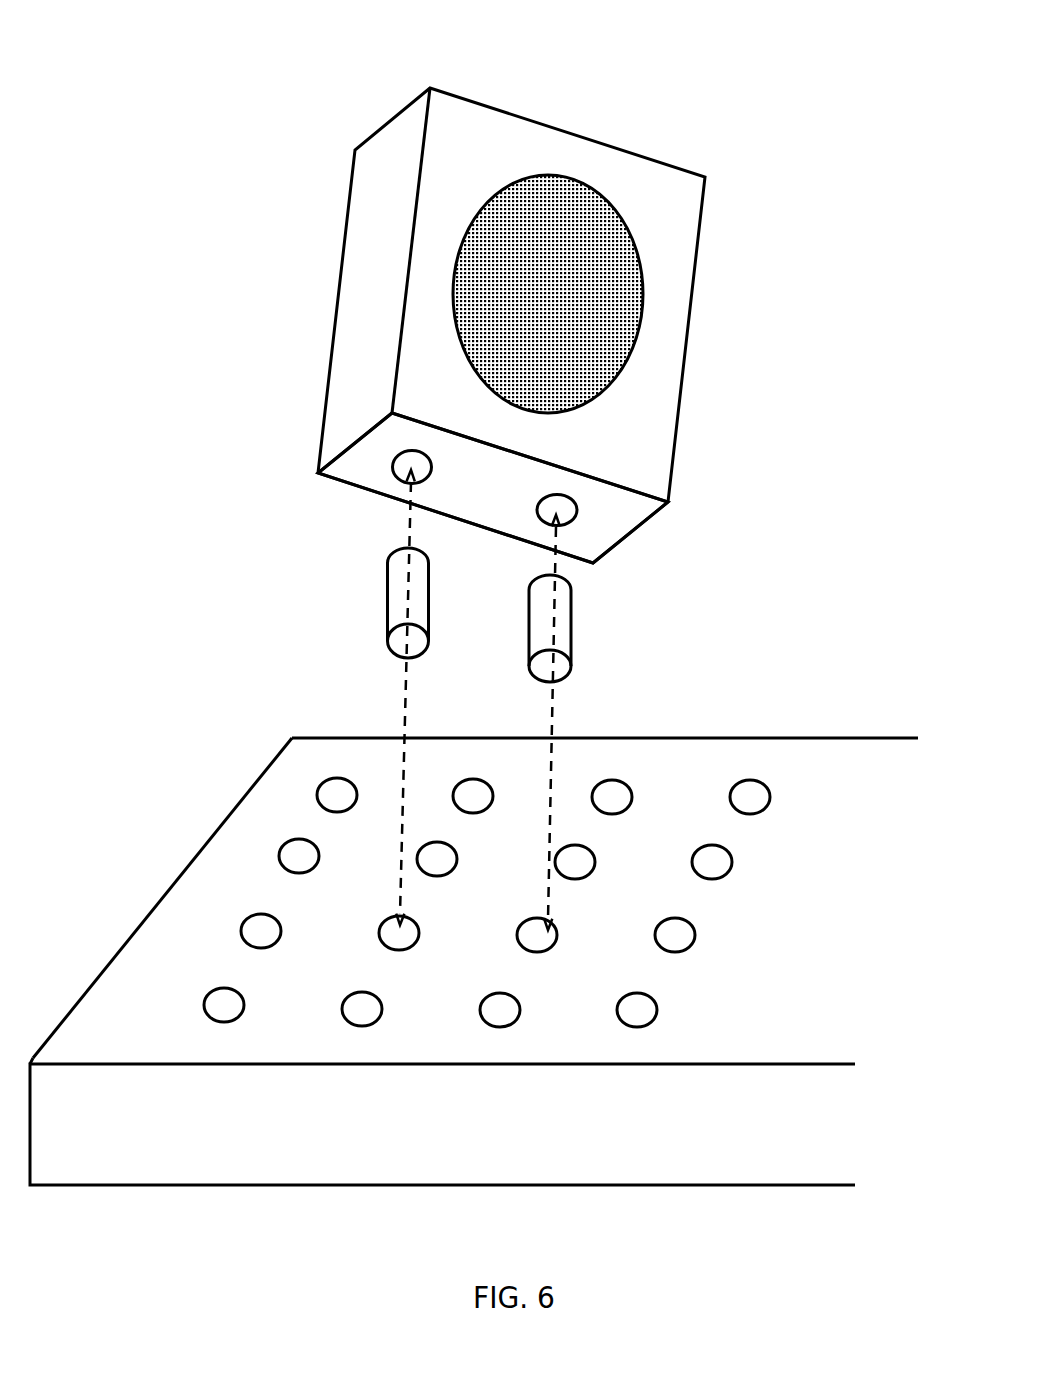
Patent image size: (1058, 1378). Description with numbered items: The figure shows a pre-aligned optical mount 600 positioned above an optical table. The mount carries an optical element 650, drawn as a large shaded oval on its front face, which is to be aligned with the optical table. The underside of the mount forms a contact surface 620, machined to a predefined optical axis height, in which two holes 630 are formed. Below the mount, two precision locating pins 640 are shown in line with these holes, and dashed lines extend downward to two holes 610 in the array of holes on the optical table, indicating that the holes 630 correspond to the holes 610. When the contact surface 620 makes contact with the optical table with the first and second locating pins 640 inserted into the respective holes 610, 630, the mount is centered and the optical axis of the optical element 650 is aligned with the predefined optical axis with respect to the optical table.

The pre-aligned optical mount 600 is at (692, 132).
The holes in the optical table 610 is at (520, 930).
The contact surface 620 is at (497, 468).
The holes in the contact surface 630 is at (533, 512).
The precision locating pins 640 is at (530, 627).
The optical element 650 is at (533, 292).